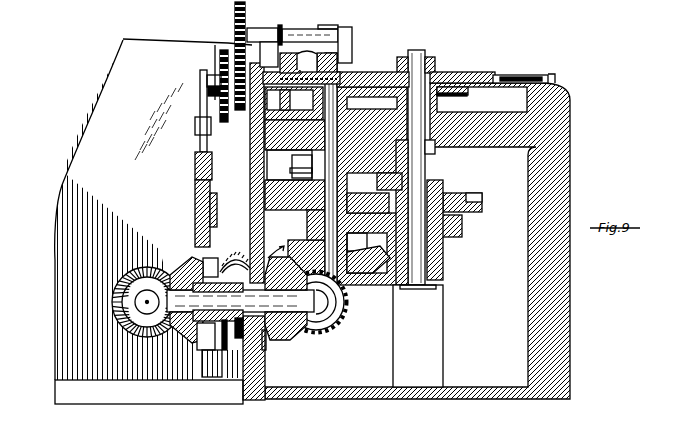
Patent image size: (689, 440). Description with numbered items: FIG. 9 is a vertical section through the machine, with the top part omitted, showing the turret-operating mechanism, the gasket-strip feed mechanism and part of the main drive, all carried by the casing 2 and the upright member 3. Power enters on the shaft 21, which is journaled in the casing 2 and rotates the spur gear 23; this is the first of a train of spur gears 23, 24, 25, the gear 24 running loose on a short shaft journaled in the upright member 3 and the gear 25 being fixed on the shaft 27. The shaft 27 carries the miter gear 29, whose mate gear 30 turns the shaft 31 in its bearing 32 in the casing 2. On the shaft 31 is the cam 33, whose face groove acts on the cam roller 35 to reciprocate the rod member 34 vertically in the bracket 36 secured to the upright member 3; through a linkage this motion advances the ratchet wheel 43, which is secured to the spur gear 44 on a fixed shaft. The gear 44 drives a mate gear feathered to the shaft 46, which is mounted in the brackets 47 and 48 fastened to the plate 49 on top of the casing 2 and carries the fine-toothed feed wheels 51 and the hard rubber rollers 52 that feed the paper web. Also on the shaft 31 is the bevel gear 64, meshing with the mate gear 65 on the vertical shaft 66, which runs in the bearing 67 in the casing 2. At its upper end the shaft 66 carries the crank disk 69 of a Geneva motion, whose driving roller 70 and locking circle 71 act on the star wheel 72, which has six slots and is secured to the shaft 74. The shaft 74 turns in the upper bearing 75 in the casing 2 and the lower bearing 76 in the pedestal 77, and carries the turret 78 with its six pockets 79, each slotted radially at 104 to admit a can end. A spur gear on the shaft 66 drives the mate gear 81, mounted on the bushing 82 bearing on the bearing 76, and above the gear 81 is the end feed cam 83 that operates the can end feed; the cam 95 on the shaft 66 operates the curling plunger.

The casing 2 is at (571, 336).
The upright member 3 is at (55, 395).
The shaft 21 is at (320, 306).
The spur gear 23 is at (330, 330).
The gear 24 is at (228, 342).
The gear 25 is at (178, 345).
The shaft 27 is at (147, 310).
The miter gear 29 is at (106, 330).
The mate gear 30 is at (220, 365).
The shaft 31 is at (186, 262).
The bearing 32 is at (288, 336).
The cam 33 is at (218, 345).
The rod member 34 is at (196, 233).
The cam roller 35 is at (238, 250).
The bracket 36 is at (210, 200).
The ratchet wheel 43 is at (200, 135).
The spur gear 44 is at (238, 112).
The shaft 46 is at (235, 32).
The bracket 47 is at (268, 30).
The bracket 48 is at (352, 33).
The plate 49 is at (345, 78).
The feed wheels 51 is at (294, 29).
The rollers 52 is at (322, 24).
The bevel gear 64 is at (298, 340).
The mate gear 65 is at (325, 155).
The vertical shaft 66 is at (352, 236).
The bearing 67 is at (352, 180).
The crank disk 69 is at (210, 90).
The driving roller 70 is at (214, 72).
The locking circle 71 is at (362, 90).
The star wheel 72 is at (470, 95).
The shaft 74 is at (419, 60).
The bearing 75 is at (438, 149).
The bearing 76 is at (445, 259).
The pedestal 77 is at (445, 308).
The turret 78 is at (475, 72).
The pockets 79 is at (532, 74).
The mate gear 81 is at (463, 226).
The bushing 82 is at (445, 241).
The end feed cam 83 is at (482, 198).
The cam 95 is at (300, 171).
The radial slot 104 is at (555, 74).